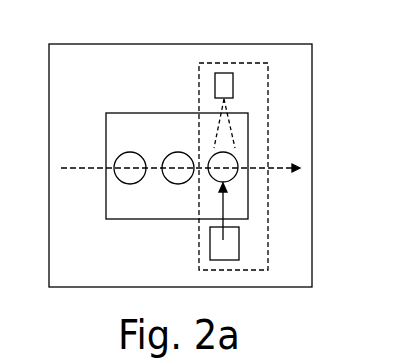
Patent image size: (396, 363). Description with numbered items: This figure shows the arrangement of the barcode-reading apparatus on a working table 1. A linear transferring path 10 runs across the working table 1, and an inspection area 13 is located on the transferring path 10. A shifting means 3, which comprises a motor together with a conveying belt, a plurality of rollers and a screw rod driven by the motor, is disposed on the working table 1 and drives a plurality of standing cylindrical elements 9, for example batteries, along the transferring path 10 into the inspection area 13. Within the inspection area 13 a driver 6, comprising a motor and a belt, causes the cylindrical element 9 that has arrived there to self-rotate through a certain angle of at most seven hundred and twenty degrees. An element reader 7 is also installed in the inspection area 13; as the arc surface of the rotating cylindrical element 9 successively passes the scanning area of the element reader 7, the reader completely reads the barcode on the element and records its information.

The working table 1 is at (103, 62).
The shifting means 3 is at (105, 138).
The driver 6 is at (226, 248).
The element reader 7 is at (233, 84).
The cylindrical element 9 is at (236, 157).
The transferring path 10 is at (91, 172).
The inspection area 13 is at (268, 84).